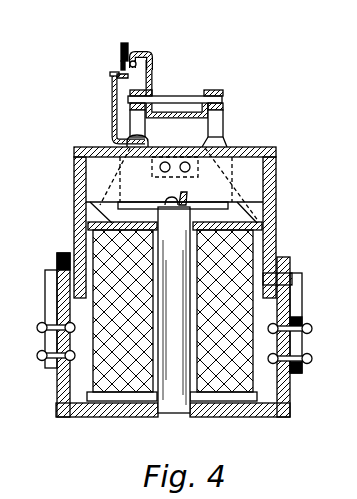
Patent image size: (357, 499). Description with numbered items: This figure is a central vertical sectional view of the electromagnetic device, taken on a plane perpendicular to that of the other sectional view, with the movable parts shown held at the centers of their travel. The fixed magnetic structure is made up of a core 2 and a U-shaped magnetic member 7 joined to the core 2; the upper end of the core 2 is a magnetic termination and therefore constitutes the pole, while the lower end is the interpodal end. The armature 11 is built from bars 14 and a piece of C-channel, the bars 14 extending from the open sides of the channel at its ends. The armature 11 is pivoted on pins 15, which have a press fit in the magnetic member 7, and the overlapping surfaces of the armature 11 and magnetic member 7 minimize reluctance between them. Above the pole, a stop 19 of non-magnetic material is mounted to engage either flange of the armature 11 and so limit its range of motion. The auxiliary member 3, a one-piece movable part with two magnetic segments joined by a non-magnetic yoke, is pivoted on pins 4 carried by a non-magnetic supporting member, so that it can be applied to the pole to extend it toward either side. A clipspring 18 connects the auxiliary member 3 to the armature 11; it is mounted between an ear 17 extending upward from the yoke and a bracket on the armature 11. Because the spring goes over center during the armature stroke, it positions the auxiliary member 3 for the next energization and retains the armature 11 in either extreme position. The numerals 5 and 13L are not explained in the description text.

The core 2 is at (160, 396).
The auxiliary member 3 is at (187, 84).
The pins 4 is at (225, 101).
The spacer block 5 is at (138, 125).
The U-shaped magnetic member 7 is at (290, 386).
The armature 11 is at (253, 147).
The light path 13L is at (95, 182).
The bars 14 is at (75, 225).
The pins 15 is at (57, 272).
The ear 17 is at (152, 82).
The clipspring 18 is at (121, 44).
The stop 19 is at (194, 200).